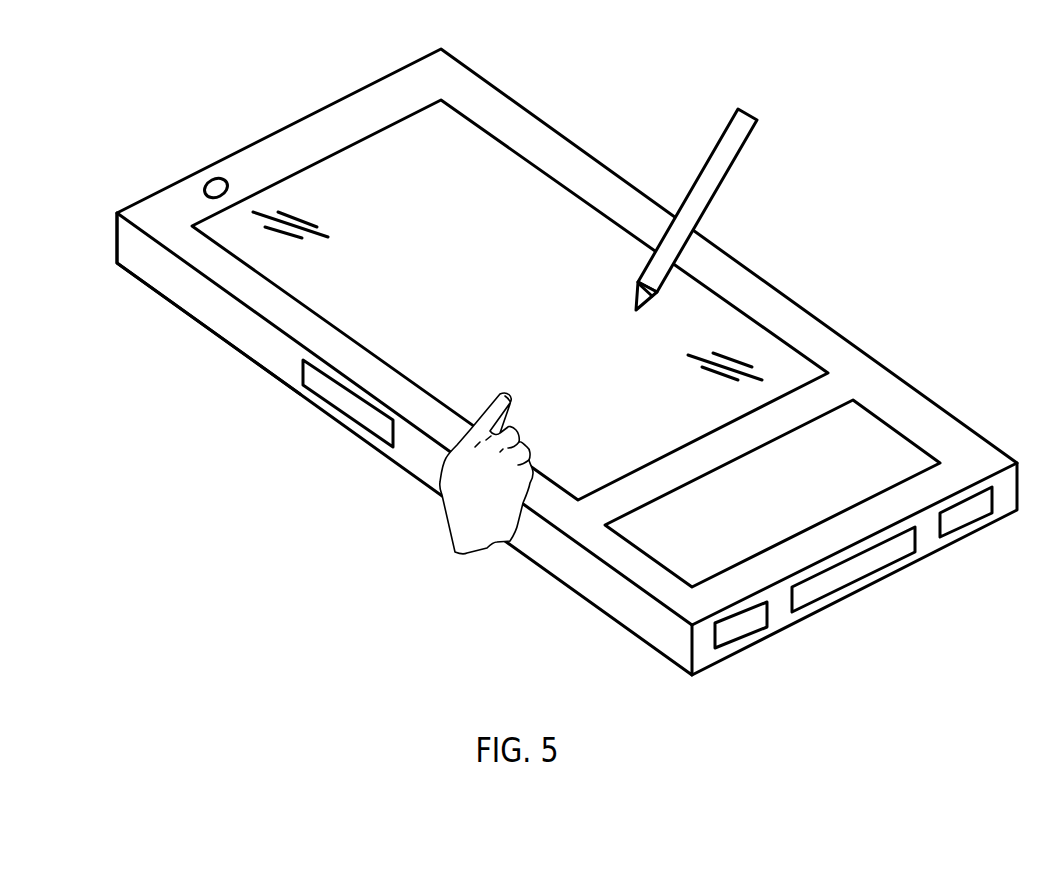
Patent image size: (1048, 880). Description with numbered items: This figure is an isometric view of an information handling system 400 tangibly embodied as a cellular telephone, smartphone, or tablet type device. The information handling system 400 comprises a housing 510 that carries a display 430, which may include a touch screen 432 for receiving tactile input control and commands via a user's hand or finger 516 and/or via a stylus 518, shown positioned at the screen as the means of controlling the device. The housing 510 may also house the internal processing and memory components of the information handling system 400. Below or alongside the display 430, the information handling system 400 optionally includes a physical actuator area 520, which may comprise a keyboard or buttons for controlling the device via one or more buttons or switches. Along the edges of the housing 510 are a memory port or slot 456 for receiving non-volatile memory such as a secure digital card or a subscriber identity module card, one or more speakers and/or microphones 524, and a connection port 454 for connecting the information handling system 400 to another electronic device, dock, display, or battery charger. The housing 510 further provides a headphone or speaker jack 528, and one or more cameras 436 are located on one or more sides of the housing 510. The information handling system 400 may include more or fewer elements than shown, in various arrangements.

The information handling system 400 is at (578, 88).
The display 430 is at (415, 165).
The touch screen 432 is at (556, 308).
The cameras 436 is at (212, 178).
The connection port 454 is at (870, 575).
The memory port or slot 456 is at (323, 397).
The housing 510 is at (377, 80).
The user's hand / finger 516 is at (498, 393).
The stylus 518 is at (717, 140).
The physical actuator area 520 is at (866, 448).
The speakers and/or microphones 524 is at (743, 637).
The headphone or speaker jack 528 is at (140, 202).